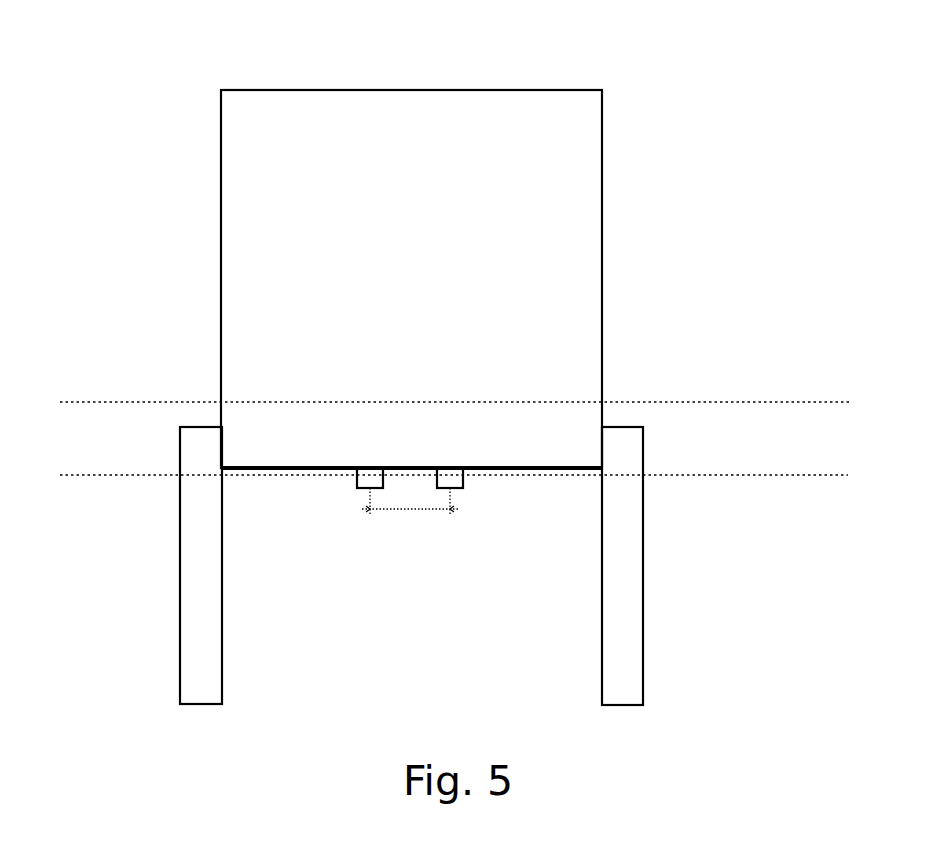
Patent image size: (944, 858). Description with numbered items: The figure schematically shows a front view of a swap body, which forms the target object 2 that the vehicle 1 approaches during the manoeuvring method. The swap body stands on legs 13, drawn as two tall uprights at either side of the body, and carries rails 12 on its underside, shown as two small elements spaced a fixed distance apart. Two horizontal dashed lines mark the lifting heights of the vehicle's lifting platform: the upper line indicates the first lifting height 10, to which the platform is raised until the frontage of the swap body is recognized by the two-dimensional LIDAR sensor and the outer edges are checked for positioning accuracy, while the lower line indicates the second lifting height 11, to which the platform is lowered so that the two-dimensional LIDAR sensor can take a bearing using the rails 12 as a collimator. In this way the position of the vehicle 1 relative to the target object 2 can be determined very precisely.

The vehicle 1 is at (837, 389).
The target object 2 is at (413, 104).
The first lifting height 10 is at (85, 399).
The second lifting height 11 is at (87, 477).
The rails 12 is at (357, 478).
The legs 13 is at (193, 599).